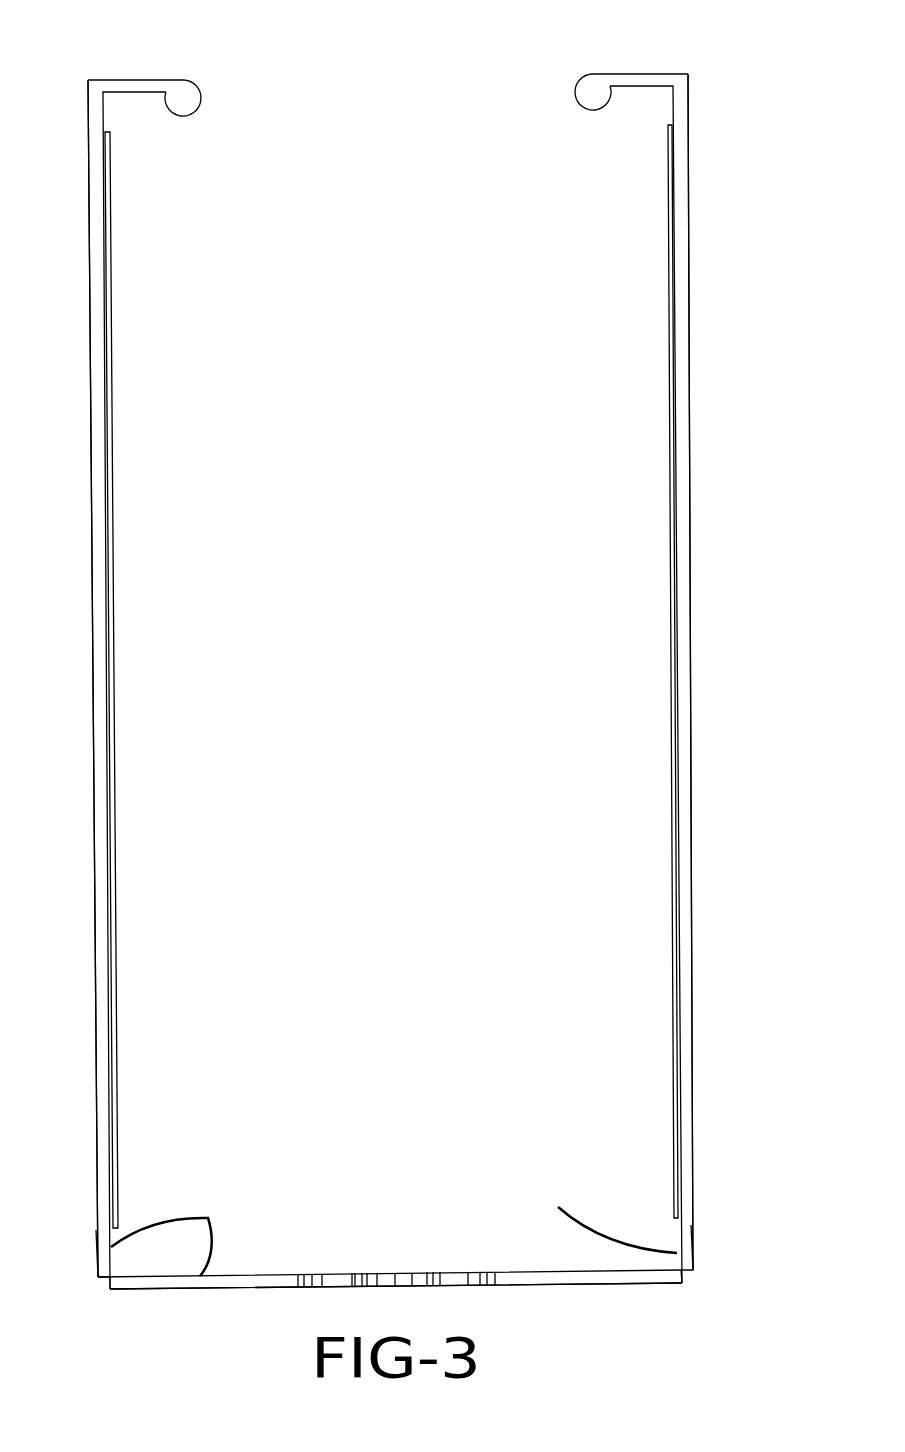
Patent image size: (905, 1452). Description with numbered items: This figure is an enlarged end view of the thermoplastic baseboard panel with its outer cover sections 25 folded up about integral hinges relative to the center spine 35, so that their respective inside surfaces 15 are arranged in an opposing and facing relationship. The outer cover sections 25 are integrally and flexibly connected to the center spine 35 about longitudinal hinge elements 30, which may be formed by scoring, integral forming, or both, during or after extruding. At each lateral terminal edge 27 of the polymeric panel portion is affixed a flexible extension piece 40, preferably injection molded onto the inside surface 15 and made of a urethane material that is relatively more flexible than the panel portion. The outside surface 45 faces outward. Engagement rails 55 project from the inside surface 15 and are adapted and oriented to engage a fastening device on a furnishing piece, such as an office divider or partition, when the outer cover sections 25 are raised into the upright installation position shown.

The inside surface 15 is at (394, 1233).
The outer cover sections 25 is at (86, 372).
The lateral terminal edge 27 is at (103, 1259).
The hinge elements 30 is at (110, 1277).
The center spine 35 is at (178, 1288).
The flexible extension piece 40 is at (114, 848).
The outside surface 45 is at (92, 608).
The engagement rails 55 is at (200, 88).